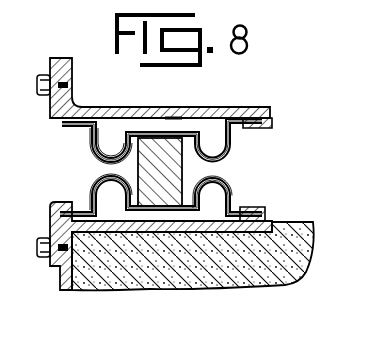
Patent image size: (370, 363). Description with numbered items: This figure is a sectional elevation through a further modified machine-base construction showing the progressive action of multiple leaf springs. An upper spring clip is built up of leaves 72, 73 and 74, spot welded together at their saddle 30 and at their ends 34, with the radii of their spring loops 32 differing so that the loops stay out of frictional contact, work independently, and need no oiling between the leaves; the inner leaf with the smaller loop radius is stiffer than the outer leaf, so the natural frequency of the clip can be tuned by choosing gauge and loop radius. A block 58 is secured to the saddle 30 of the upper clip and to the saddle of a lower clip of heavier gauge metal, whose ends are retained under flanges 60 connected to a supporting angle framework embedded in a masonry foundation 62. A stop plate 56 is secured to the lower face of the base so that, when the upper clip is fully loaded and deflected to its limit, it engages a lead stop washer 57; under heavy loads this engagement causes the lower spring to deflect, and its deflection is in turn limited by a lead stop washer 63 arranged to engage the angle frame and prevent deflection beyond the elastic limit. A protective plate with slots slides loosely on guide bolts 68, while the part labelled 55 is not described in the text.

The saddle 30 is at (138, 108).
The stop washer 57 is at (175, 92).
The stop plate 56 is at (208, 114).
The retaining clip 55 is at (288, 211).
The ends 34 is at (240, 133).
The block 58 is at (184, 174).
The spring loops 32 is at (217, 178).
The lead stop washer 63 is at (228, 186).
The leaf 74 is at (91, 150).
The leaf 73 is at (102, 157).
The leaf 72 is at (94, 181).
The flanges 60 is at (58, 206).
The guide bolts 68 is at (37, 247).
The masonry foundation 62 is at (233, 282).